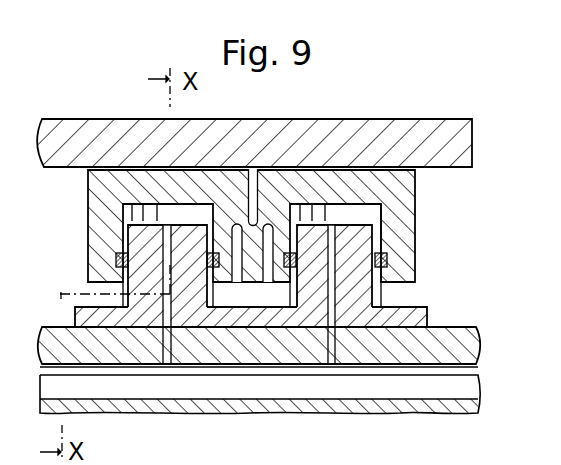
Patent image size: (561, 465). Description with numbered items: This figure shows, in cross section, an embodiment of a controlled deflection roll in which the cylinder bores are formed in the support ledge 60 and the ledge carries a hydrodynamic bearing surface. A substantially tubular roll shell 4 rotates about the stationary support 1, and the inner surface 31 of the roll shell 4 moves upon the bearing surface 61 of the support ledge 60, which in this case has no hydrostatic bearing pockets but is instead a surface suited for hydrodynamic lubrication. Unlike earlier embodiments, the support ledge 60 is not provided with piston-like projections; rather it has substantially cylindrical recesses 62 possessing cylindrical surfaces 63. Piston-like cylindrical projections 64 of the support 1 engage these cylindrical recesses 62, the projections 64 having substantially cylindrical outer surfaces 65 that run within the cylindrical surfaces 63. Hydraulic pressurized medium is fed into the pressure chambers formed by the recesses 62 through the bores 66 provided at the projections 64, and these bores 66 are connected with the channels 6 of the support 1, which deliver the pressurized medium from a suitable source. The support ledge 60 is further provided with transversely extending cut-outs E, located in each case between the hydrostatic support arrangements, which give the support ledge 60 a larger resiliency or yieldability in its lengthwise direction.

The stationary support 1 is at (470, 343).
The roll shell 4 is at (463, 148).
The bores 6 is at (468, 385).
The inner surface 31 is at (451, 178).
The support ledge 60 is at (95, 237).
The bearing surface 61 is at (108, 167).
The cylindrical recesses 62 is at (367, 210).
The cylindrical surfaces 63 is at (375, 221).
The piston-like cylindrical projections 64 is at (130, 287).
The cylindrical outer surfaces 65 is at (378, 296).
The bores 66 is at (336, 309).
The cut-outs E is at (256, 178).